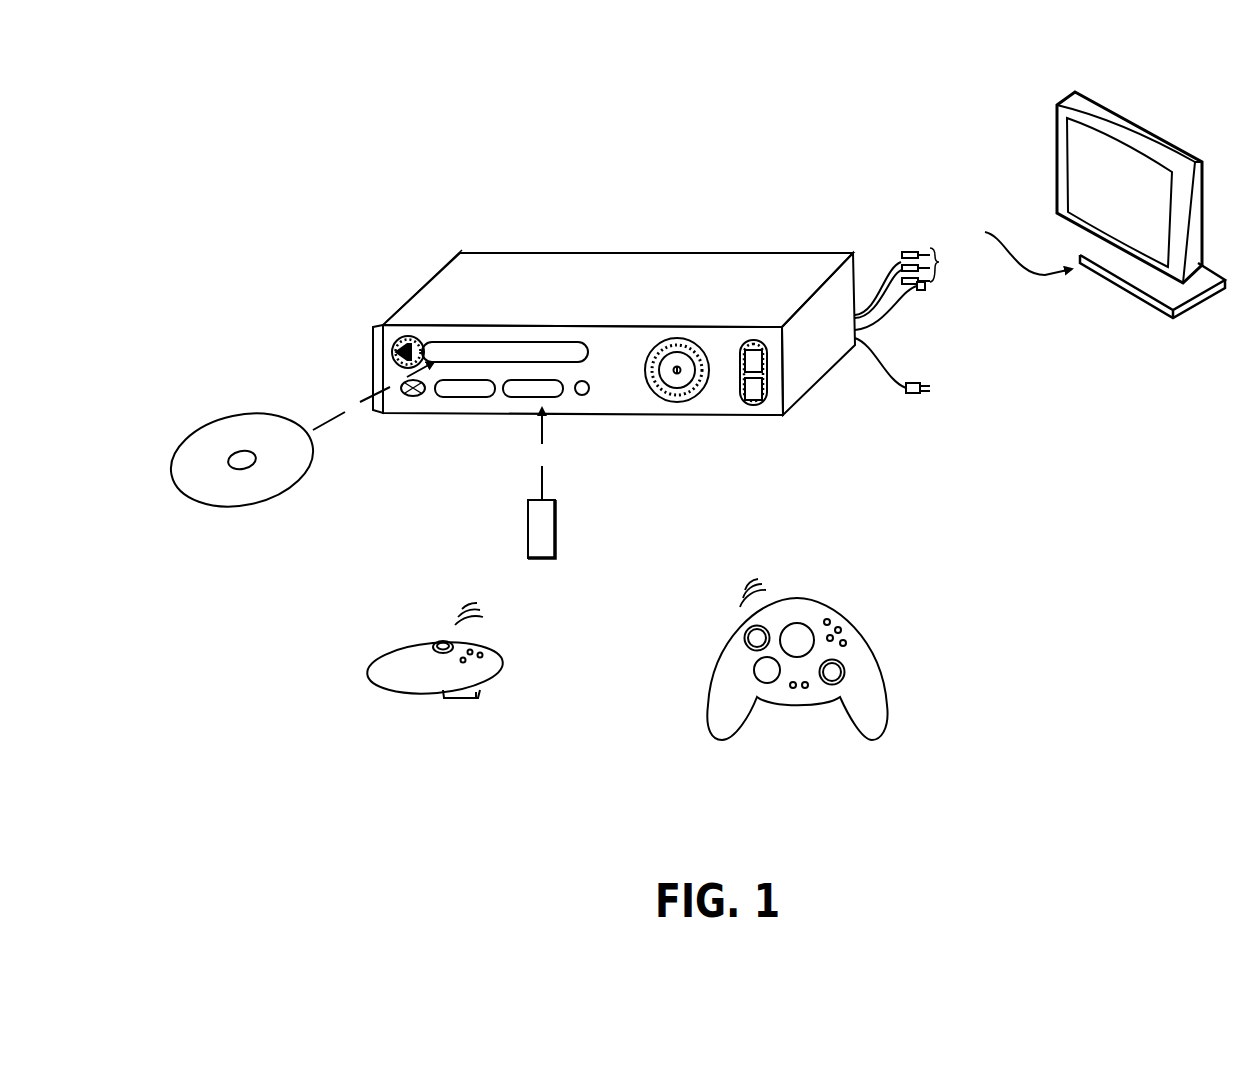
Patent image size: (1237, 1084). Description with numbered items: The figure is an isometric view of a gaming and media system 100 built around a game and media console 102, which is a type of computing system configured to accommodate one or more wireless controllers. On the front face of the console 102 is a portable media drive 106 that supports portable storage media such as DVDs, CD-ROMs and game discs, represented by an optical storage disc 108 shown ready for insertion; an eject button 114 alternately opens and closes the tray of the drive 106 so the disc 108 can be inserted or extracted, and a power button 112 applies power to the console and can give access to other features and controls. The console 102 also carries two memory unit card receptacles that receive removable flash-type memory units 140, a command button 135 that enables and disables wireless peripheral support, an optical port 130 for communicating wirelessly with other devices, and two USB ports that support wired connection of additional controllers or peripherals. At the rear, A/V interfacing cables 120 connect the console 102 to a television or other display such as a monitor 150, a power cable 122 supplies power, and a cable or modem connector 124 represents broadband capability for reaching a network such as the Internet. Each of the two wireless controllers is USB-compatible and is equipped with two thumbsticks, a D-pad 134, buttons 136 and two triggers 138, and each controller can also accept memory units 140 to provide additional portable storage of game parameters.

The gaming and media system 100 is at (645, 214).
The game and media console 102 is at (492, 263).
The portable media drive 106 is at (512, 342).
The optical storage disc 108 is at (252, 503).
The power button 112 is at (678, 390).
The eject button 114 is at (398, 348).
The A/V interfacing cables 120 is at (906, 253).
The power cable 122 is at (909, 393).
The cable or modem connector 124 is at (922, 290).
The optical port 130 is at (412, 398).
The D-pad 134 is at (754, 670).
The command button 135 is at (582, 396).
The buttons 136 is at (841, 630).
The triggers 138 is at (475, 709).
The memory unit 140 is at (545, 558).
The monitor 150 is at (1057, 158).